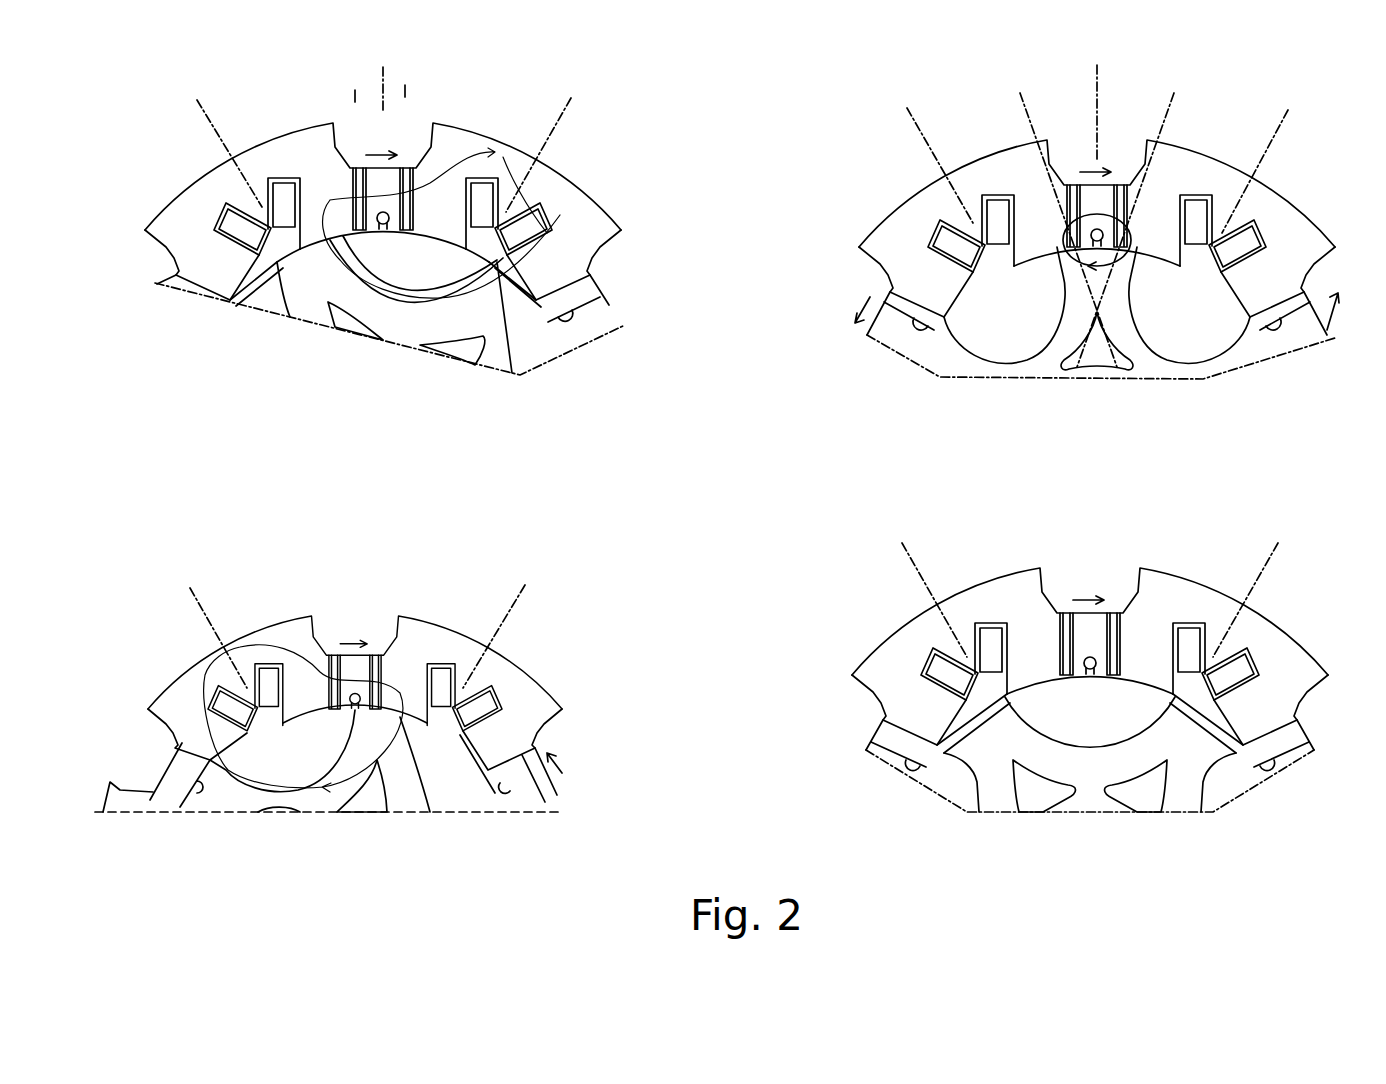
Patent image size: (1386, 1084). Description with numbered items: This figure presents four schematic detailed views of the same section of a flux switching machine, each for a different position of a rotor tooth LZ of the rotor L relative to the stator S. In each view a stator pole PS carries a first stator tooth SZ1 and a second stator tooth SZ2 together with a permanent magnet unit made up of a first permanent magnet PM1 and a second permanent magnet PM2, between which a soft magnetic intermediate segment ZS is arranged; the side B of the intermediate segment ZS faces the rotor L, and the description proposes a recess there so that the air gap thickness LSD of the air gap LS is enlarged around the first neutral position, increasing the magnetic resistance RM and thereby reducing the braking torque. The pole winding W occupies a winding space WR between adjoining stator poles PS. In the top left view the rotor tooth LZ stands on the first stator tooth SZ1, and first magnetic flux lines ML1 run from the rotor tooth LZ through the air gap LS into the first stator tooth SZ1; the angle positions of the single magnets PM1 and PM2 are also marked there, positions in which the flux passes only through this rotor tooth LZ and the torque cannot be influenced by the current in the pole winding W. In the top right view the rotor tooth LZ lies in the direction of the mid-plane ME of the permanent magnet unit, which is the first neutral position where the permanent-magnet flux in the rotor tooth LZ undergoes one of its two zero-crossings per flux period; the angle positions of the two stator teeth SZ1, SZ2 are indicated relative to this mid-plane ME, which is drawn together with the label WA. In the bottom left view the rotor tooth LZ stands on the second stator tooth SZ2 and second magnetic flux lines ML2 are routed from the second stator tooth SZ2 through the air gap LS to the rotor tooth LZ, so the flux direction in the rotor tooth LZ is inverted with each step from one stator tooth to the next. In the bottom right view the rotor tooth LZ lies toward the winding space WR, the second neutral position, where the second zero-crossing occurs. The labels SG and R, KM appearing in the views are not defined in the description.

The pole shoe PS is at (978, 598).
The first stator tooth SZ1 is at (1040, 678).
The second stator tooth SZ2 is at (1140, 678).
The first permanent magnet PM1 is at (1061, 648).
The second permanent magnet PM2 is at (1113, 648).
The side of the soft magnetic intermediate segment facing the machine axis B is at (1092, 672).
The soft magnetic intermediate segment ZS is at (1095, 636).
The magnetic resistance RM is at (1090, 592).
The rotor tooth LZ is at (1004, 745).
The rotor L is at (1097, 784).
The air gap thickness LSD is at (946, 754).
The rib R is at (913, 770).
The notch KM is at (1089, 765).
The pole winding W is at (1197, 242).
The winding space WR is at (1208, 286).
The mid-plane of the permanent magnet unit ME is at (1097, 118).
The axis WA is at (1097, 76).
The air gap LS is at (266, 293).
The stator S is at (162, 208).
The first magnetic flux lines ML1 is at (557, 193).
The stator groove SG is at (585, 217).
The second magnetic flux lines ML2 is at (217, 673).